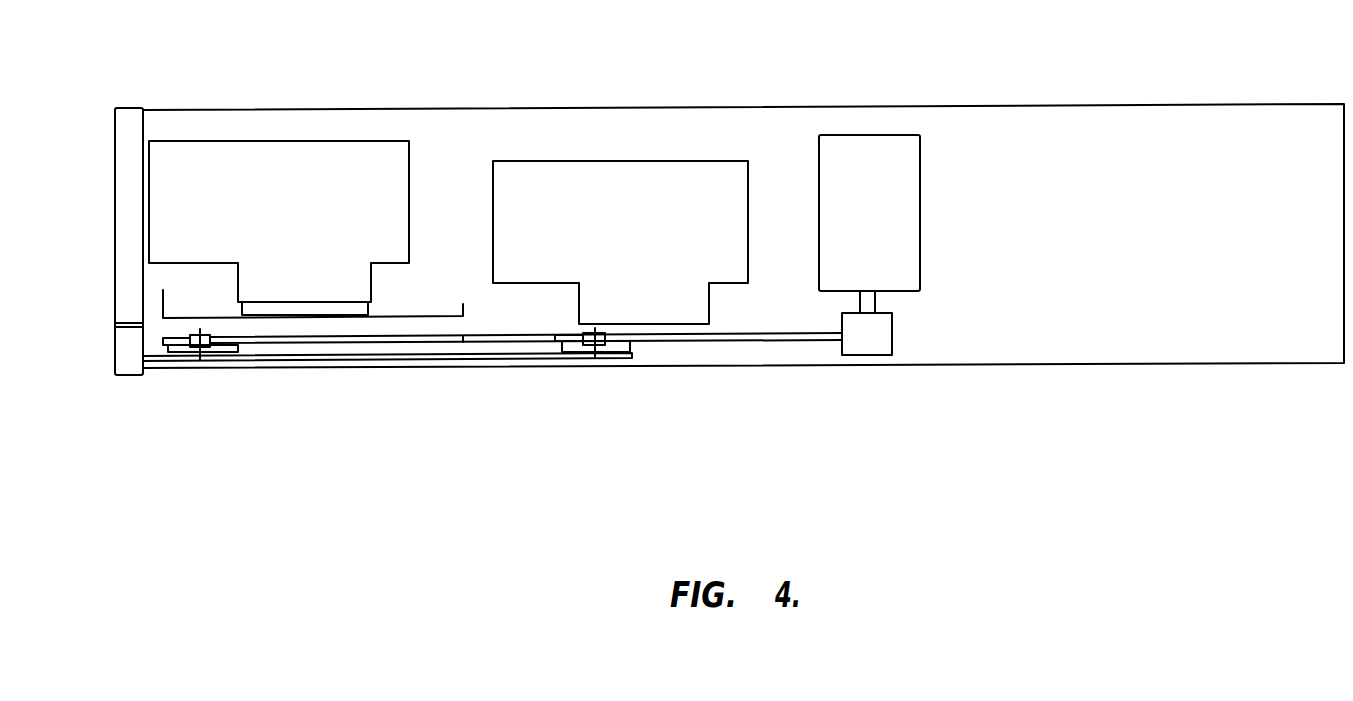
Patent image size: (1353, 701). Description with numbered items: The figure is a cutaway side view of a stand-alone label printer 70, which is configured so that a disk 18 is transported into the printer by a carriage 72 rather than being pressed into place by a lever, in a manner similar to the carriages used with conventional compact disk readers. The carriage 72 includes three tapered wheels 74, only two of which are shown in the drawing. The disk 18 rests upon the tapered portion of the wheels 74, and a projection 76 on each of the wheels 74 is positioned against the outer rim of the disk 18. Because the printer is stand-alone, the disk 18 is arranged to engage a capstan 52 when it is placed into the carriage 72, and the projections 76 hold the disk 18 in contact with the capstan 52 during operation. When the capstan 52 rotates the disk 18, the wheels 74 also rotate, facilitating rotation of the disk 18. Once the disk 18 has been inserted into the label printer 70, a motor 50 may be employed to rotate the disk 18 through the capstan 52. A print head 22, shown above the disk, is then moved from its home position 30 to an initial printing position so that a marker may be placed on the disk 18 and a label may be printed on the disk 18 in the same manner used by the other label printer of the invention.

The label printer 70 is at (1090, 72).
The carriage 72 is at (125, 362).
The print head 22 is at (388, 155).
The home position 30 is at (330, 157).
The motor 50 is at (897, 226).
The capstan 52 is at (875, 338).
The disk 18 is at (763, 339).
The tapered wheels 74 is at (220, 348).
The projection 76 is at (200, 335).